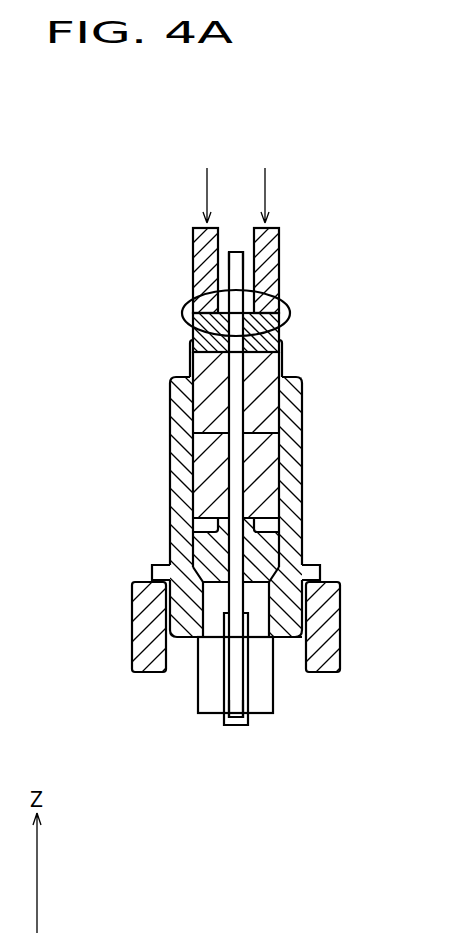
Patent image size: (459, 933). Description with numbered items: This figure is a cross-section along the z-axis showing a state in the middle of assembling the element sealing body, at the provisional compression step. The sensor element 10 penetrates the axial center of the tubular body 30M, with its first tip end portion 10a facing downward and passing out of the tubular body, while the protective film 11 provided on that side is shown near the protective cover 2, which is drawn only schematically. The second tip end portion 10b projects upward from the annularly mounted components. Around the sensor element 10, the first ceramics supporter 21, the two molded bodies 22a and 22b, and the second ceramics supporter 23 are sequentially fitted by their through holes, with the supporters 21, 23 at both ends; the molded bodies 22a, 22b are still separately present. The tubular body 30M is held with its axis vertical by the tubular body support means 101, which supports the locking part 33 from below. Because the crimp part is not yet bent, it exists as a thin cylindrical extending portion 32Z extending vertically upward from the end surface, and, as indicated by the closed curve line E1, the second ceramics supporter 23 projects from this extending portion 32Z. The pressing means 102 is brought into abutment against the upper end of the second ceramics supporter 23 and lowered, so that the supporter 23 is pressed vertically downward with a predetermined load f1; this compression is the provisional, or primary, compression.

The protective cover 2 is at (198, 688).
The sensor element 10 is at (233, 490).
The first tip end portion 10a is at (239, 741).
The second tip end portion 10b is at (235, 248).
The protective film 11 is at (224, 700).
The first ceramics supporter 21 is at (265, 543).
The molded body 22a is at (268, 466).
The molded body 22b is at (265, 402).
The second ceramics supporter 23 is at (272, 333).
The holding member 30M is at (182, 447).
The extending portion 32Z is at (191, 358).
The locking part 33 is at (155, 570).
The tubular body support means 101 is at (142, 672).
The pressing means 102 is at (210, 256).
The closed curve line E1 is at (182, 313).
The load f1 is at (235, 181).